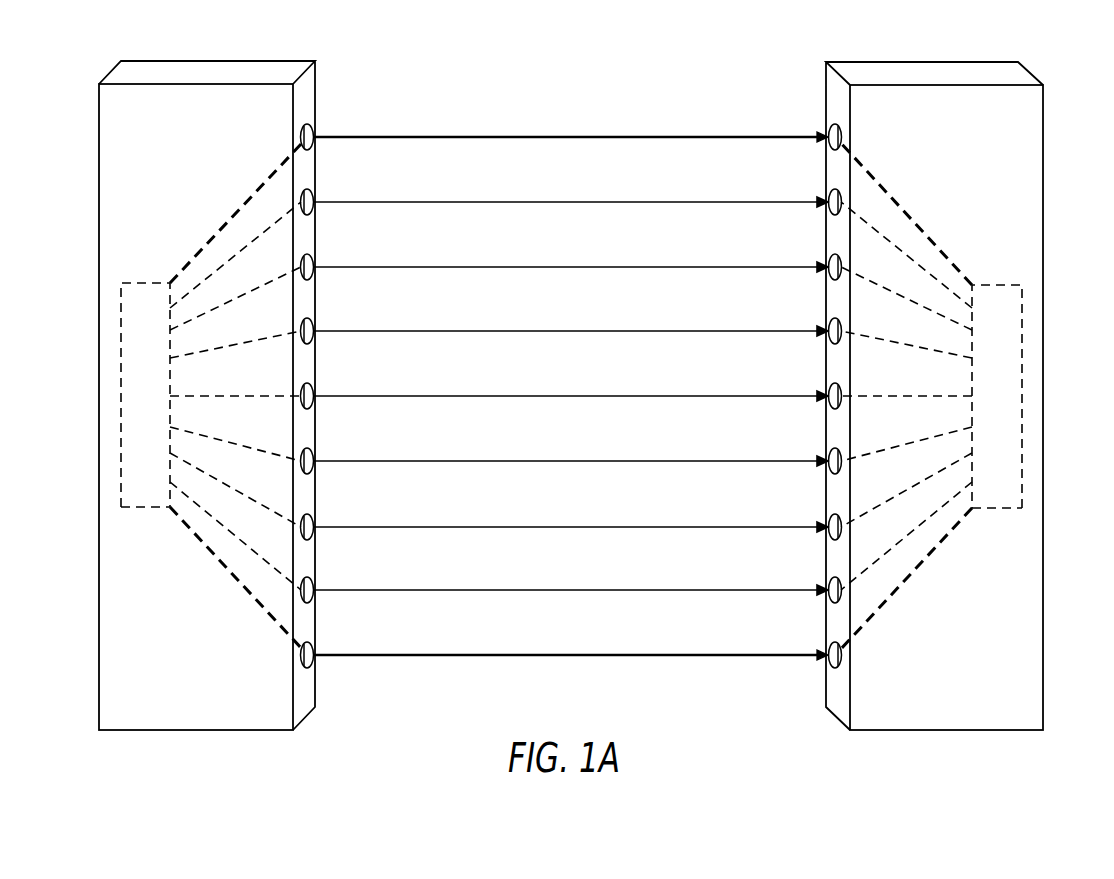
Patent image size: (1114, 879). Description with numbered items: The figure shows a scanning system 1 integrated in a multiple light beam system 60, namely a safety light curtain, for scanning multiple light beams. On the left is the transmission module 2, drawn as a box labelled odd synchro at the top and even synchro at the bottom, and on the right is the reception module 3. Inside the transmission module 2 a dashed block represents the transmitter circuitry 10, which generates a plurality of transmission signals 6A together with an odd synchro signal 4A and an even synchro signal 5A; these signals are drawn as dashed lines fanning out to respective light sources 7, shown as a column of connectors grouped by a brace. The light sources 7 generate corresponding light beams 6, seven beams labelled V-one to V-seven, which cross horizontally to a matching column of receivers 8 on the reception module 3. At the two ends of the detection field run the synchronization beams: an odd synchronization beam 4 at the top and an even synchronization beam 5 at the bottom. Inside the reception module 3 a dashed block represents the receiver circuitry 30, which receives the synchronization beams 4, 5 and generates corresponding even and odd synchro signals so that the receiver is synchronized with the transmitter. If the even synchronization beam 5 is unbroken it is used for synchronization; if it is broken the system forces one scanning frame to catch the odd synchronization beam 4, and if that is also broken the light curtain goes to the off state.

The scanning system 1 is at (137, 508).
The transmission module 2 is at (218, 61).
The reception module 3 is at (923, 62).
The odd synchronization beam 4 is at (570, 137).
The even synchronization beam 5 is at (570, 655).
The light beams 6 is at (570, 202).
The odd synchro signal 4A is at (233, 217).
The even synchro signal 5A is at (230, 572).
The transmission signals 6A is at (198, 289).
The light sources 7 is at (289, 670).
The right connector group 8 is at (858, 670).
The transmitter circuitry 10 is at (121, 387).
The receiver circuitry 30 is at (1013, 378).
The multiple light beam system 60 is at (700, 96).